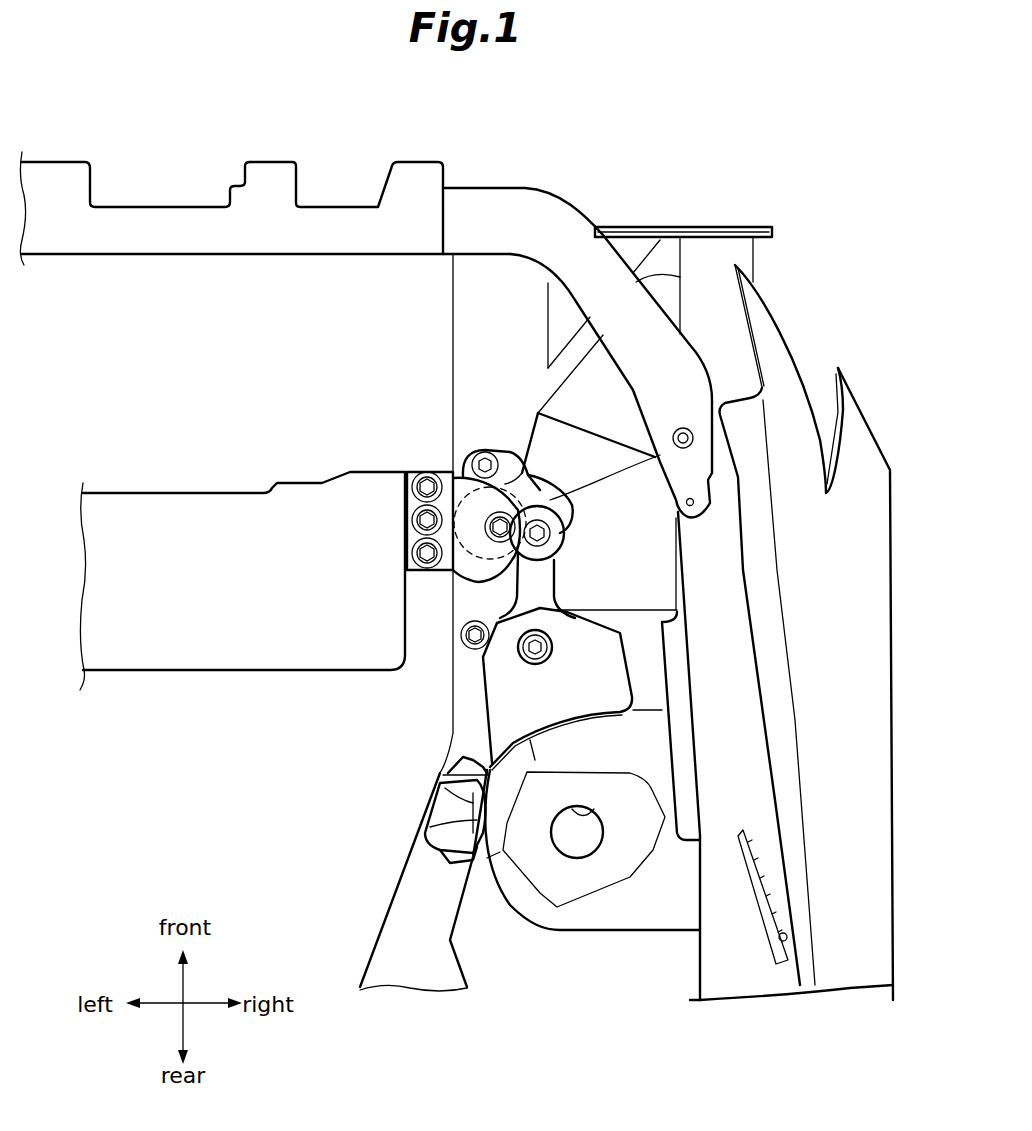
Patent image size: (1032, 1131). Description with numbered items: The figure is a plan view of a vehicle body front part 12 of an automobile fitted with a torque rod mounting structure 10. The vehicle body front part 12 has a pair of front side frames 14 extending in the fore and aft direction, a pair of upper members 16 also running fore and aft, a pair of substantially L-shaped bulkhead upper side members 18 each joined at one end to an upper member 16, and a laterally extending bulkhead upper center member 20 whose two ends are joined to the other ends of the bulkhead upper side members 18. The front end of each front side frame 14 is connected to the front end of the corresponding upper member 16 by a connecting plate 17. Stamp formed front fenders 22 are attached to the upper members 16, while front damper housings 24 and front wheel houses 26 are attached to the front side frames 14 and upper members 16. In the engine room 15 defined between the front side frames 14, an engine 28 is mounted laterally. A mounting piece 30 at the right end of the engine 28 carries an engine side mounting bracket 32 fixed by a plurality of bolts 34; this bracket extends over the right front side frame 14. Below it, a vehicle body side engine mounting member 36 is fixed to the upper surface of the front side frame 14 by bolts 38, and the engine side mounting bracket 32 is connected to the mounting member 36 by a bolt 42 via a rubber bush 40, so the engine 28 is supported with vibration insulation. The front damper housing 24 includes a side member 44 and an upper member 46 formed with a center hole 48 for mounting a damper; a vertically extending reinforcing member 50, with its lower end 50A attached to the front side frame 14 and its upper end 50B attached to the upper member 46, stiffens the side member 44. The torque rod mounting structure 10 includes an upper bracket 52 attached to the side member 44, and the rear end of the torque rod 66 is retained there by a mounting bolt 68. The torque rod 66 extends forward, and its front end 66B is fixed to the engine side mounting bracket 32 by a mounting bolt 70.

The torque rod mounting structure 10 is at (477, 683).
The vehicle body front part 12 is at (661, 226).
The front side frame 14 is at (453, 318).
The engine room 15 is at (223, 384).
The upper member 16 is at (727, 313).
The connecting plate 17 is at (720, 232).
The bulkhead upper side member 18 is at (522, 200).
The bulkhead upper center member 20 is at (340, 212).
The front fender 22 is at (865, 498).
The front damper housing 24 is at (550, 930).
The front wheel house 26 is at (618, 487).
The engine 28 is at (205, 505).
The mounting piece 30 is at (407, 563).
The engine side mounting bracket 32 is at (427, 572).
The bolts 34 is at (412, 487).
The vehicle body side engine mounting member 36 is at (503, 483).
The bolts 38 is at (485, 452).
The rubber bush 40 is at (528, 478).
The bolt 42 is at (490, 550).
The side member 44 is at (642, 620).
The upper member 46 is at (510, 880).
The center hole 48 is at (588, 810).
The reinforcing member 50 is at (428, 822).
The upper portion of lock bracket 50A is at (442, 810).
The upper end 50B is at (433, 860).
The upper bracket 52 is at (514, 706).
The torque rod 66 is at (556, 600).
The front end 66B is at (550, 498).
The mounting bolt 68 is at (537, 665).
The mounting bolt 70 is at (552, 532).